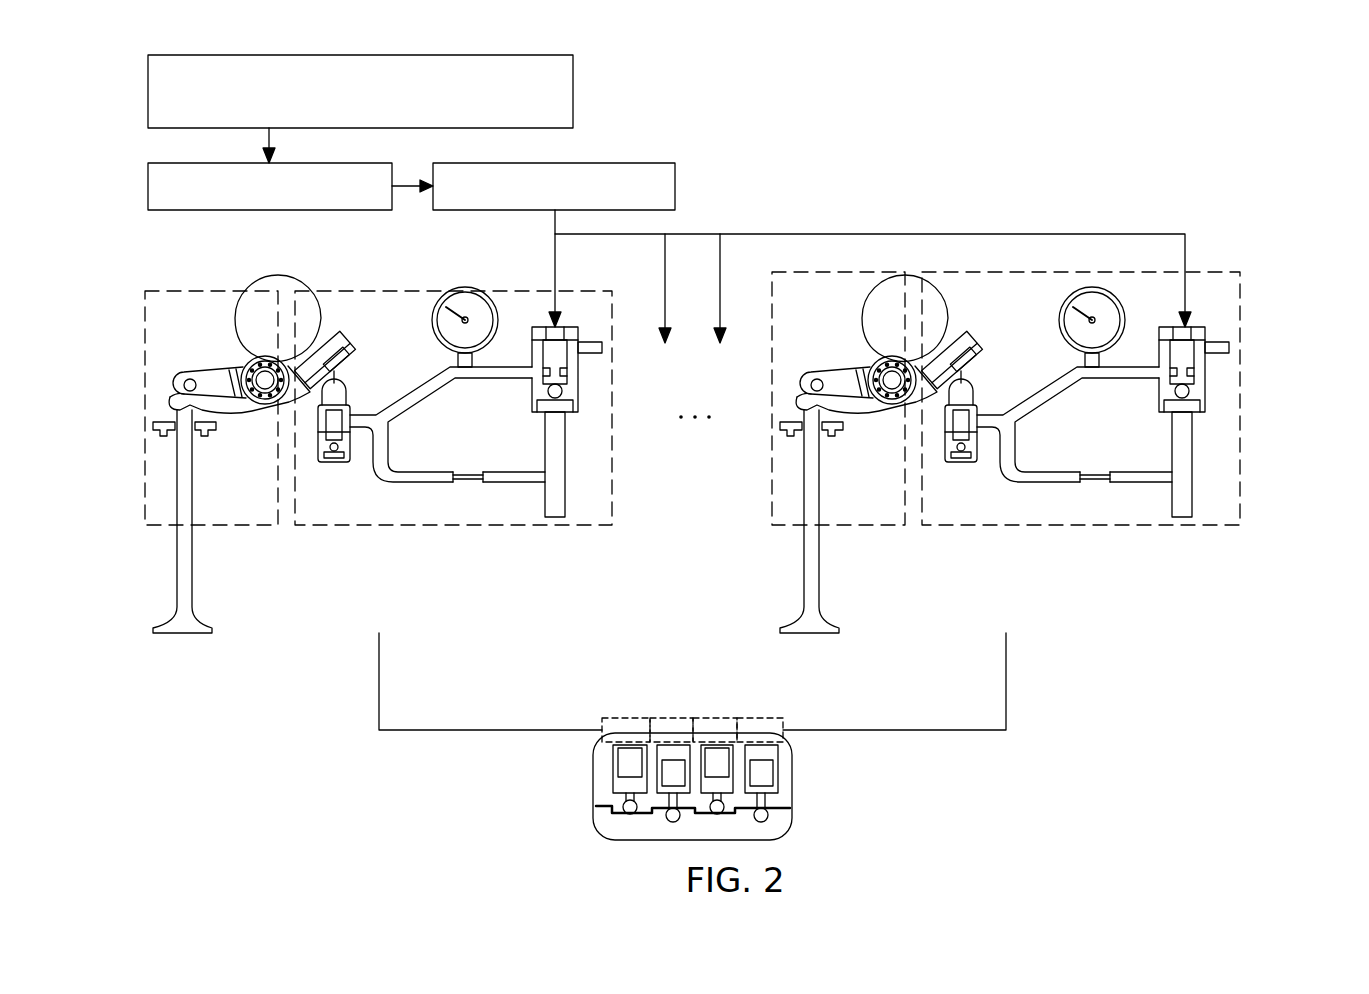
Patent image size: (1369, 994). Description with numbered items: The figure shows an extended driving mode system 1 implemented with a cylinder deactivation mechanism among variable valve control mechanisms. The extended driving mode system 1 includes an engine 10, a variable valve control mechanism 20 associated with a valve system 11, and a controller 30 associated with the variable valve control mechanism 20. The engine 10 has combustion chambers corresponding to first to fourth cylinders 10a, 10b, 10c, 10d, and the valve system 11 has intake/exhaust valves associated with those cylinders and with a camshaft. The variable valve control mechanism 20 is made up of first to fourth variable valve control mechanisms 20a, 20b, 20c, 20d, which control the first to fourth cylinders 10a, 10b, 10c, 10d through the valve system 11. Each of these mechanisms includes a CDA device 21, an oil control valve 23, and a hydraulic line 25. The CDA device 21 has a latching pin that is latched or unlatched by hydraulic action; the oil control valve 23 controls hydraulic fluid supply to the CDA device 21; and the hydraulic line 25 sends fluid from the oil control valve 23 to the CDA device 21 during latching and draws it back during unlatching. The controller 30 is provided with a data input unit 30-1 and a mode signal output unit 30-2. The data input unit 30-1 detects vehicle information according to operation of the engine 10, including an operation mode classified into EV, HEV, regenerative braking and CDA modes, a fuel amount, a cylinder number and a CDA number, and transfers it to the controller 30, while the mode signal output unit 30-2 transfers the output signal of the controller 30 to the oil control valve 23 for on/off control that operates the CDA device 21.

The extended driving mode system 1 is at (1108, 150).
The engine 10 is at (697, 786).
The first cylinder 10a is at (627, 755).
The second cylinder 10b is at (672, 768).
The third cylinder 10c is at (715, 757).
The fourth cylinder 10d is at (763, 777).
The valve system 11 is at (250, 525).
The variable valve control mechanism 20 is at (792, 662).
The first variable valve control mechanism 20a is at (537, 525).
The second variable valve control mechanism 20b is at (668, 718).
The third variable valve control mechanism 20c is at (721, 718).
The fourth variable valve control mechanism 20d is at (1164, 525).
The CDA device 21 is at (340, 393).
The oil control valve 23 is at (577, 333).
The hydraulic line 25 is at (408, 398).
The controller 30 is at (186, 210).
The data input unit 30-1 is at (573, 88).
The mode signal output unit 30-2 is at (675, 186).